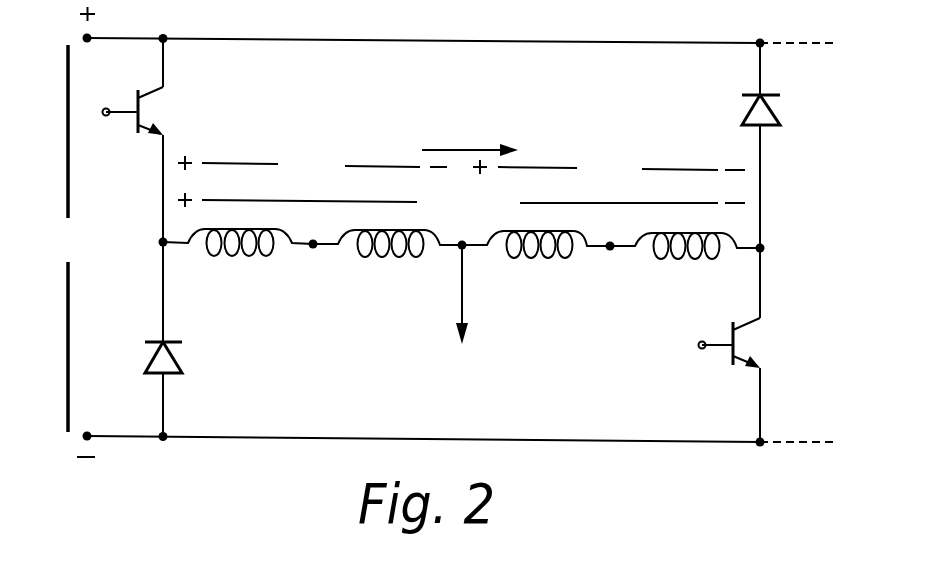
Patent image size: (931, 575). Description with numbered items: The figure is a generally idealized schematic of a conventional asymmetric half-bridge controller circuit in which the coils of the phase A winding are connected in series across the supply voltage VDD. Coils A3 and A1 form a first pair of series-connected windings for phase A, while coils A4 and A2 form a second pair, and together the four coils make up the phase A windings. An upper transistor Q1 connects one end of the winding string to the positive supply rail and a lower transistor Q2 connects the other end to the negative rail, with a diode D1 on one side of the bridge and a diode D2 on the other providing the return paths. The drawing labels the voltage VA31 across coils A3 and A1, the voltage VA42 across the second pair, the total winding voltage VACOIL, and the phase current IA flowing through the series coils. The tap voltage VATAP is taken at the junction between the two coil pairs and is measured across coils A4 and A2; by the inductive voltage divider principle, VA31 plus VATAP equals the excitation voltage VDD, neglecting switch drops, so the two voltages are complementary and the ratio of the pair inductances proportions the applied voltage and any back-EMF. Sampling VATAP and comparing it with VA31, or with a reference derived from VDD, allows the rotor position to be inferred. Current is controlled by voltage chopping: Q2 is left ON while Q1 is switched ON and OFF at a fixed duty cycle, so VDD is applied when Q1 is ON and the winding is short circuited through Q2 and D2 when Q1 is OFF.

The supply voltage VDD is at (48, 238).
The transistor Q1 is at (161, 103).
The transistor Q2 is at (740, 343).
The diode D1 is at (778, 110).
The diode D2 is at (147, 359).
The coil A1 is at (387, 260).
The coil A2 is at (685, 263).
The coil A3 is at (238, 259).
The coil A4 is at (536, 262).
The tap voltage VATAP is at (452, 312).
The voltage across coils A3 and A1 VA31 is at (312, 154).
The voltage across coil sections A4-A2 VA42 is at (609, 157).
The total armature coil voltage VACOIL is at (461, 204).
The armature current IA is at (470, 133).